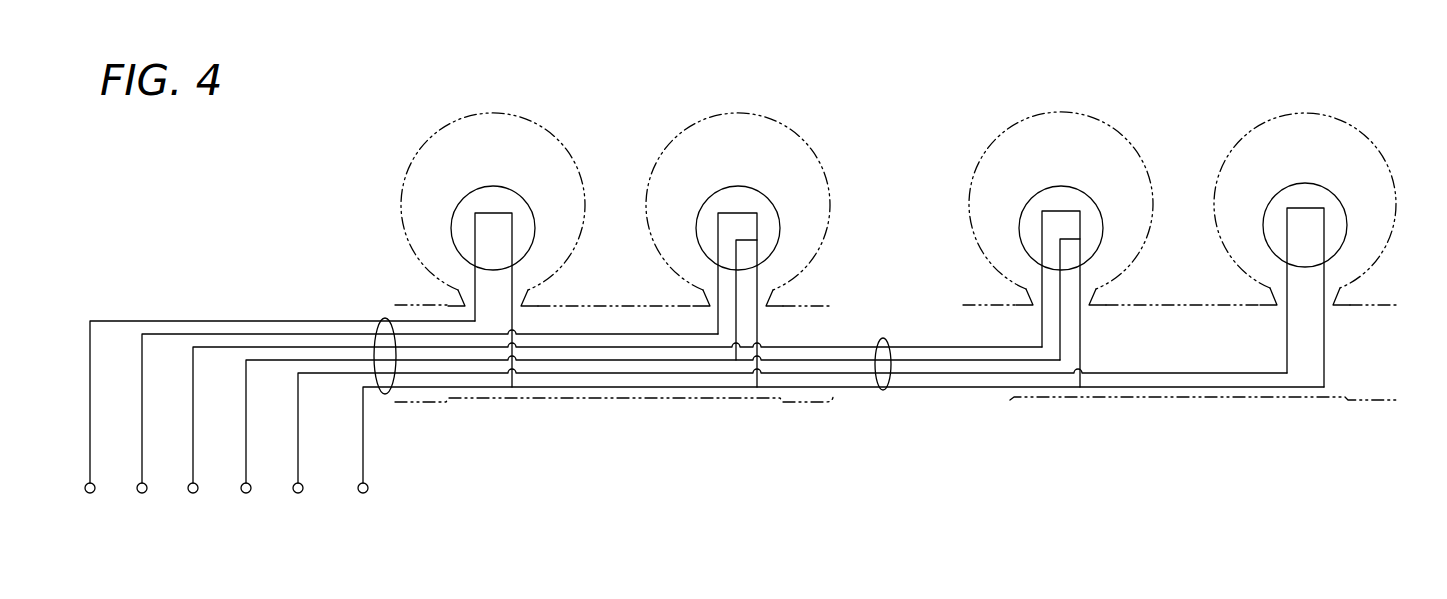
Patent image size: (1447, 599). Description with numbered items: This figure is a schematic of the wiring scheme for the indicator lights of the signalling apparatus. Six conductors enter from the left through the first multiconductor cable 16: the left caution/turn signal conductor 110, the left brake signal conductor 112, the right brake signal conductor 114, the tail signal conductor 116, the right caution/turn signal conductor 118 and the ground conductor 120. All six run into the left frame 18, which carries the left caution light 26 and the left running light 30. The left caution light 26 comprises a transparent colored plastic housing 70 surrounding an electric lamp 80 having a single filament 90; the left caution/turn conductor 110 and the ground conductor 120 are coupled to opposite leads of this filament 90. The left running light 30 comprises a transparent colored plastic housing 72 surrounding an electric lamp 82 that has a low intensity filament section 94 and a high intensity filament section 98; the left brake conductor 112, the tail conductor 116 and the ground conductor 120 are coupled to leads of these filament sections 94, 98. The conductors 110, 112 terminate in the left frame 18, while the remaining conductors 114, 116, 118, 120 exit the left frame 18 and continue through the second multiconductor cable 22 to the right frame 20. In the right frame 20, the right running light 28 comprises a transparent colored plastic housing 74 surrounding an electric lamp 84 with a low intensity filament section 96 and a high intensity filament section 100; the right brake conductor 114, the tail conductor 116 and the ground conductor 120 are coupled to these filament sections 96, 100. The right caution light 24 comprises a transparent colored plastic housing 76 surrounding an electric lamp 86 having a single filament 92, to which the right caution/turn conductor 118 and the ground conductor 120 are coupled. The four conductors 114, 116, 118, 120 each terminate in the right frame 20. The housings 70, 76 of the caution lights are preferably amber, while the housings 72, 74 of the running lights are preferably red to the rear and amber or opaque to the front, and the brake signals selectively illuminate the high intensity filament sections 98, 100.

The first multiconductor cable 16 is at (386, 394).
The left frame 18 is at (622, 402).
The right frame 20 is at (1200, 398).
The second multiconductor cable 22 is at (883, 390).
The right caution light 24 is at (1304, 234).
The left caution light 26 is at (477, 234).
The right running light 28 is at (1040, 234).
The left running light 30 is at (741, 234).
The transparent colored plastic housing 70 is at (569, 152).
The transparent colored plastic housing 72 is at (820, 158).
The transparent colored plastic housing 74 is at (1137, 150).
The transparent colored plastic housing 76 is at (1385, 155).
The electric lamp 80 is at (463, 223).
The electric lamp 82 is at (768, 222).
The electric lamp 84 is at (1035, 205).
The electric lamp 86 is at (1278, 205).
The filament 90 is at (475, 250).
The filament 92 is at (1287, 223).
The low intensity filament section 94 is at (744, 250).
The low intensity filament section 96 is at (1068, 251).
The high intensity filament section 98 is at (722, 230).
The high intensity filament section 100 is at (1040, 249).
The left caution/turn signal conductor 110 is at (113, 321).
The left brake signal conductor 112 is at (173, 334).
The right brake signal conductor 114 is at (215, 347).
The tail signal conductor 116 is at (270, 360).
The right caution/turn signal conductor 118 is at (312, 373).
The ground conductor 120 is at (363, 476).